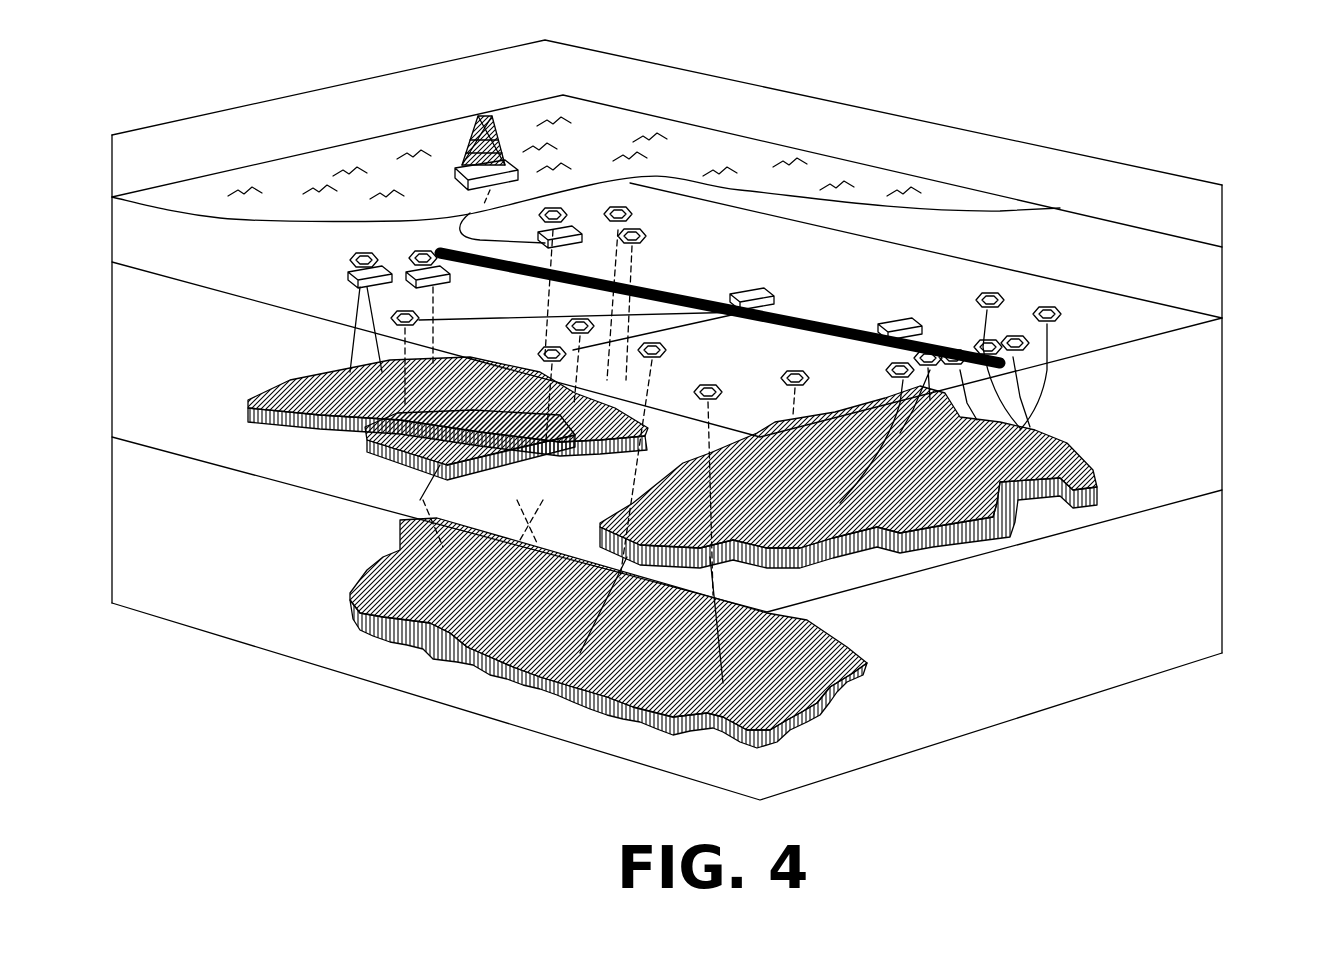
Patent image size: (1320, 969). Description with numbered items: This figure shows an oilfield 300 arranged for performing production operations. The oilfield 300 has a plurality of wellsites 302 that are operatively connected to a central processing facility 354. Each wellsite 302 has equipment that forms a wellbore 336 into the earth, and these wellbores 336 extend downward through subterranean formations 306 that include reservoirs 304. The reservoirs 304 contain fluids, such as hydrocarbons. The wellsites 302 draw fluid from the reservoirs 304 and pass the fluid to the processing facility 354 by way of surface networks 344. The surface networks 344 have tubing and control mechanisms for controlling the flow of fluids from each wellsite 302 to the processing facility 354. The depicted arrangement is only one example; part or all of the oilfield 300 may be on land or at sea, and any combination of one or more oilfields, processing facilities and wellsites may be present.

The oilfield 300 is at (155, 46).
The wellsites 302 is at (800, 360).
The reservoirs 304 is at (943, 548).
The subterranean formations 306 is at (1245, 320).
The wellbore 336 is at (1030, 430).
The surface networks 344 is at (395, 284).
The central processing facility 354 is at (462, 130).